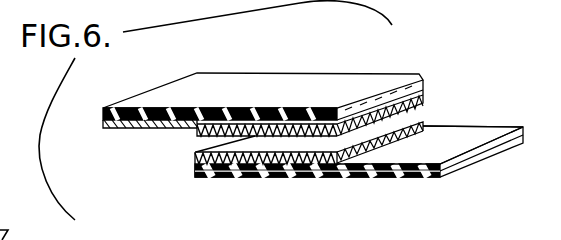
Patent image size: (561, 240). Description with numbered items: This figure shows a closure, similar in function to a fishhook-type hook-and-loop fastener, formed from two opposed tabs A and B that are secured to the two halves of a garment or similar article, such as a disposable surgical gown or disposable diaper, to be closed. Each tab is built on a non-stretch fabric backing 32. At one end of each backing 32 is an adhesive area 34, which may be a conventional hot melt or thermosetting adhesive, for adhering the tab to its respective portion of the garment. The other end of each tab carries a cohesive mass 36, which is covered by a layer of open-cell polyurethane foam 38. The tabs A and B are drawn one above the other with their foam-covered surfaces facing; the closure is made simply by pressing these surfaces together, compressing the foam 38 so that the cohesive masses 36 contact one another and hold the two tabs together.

The non-stretch fabric backing 32 is at (245, 80).
The adhesive area 34 is at (473, 131).
The cohesive mass 36 is at (404, 87).
The open-cell polyurethane foam 38 is at (248, 172).
The tab A is at (337, 33).
The tab B is at (203, 180).